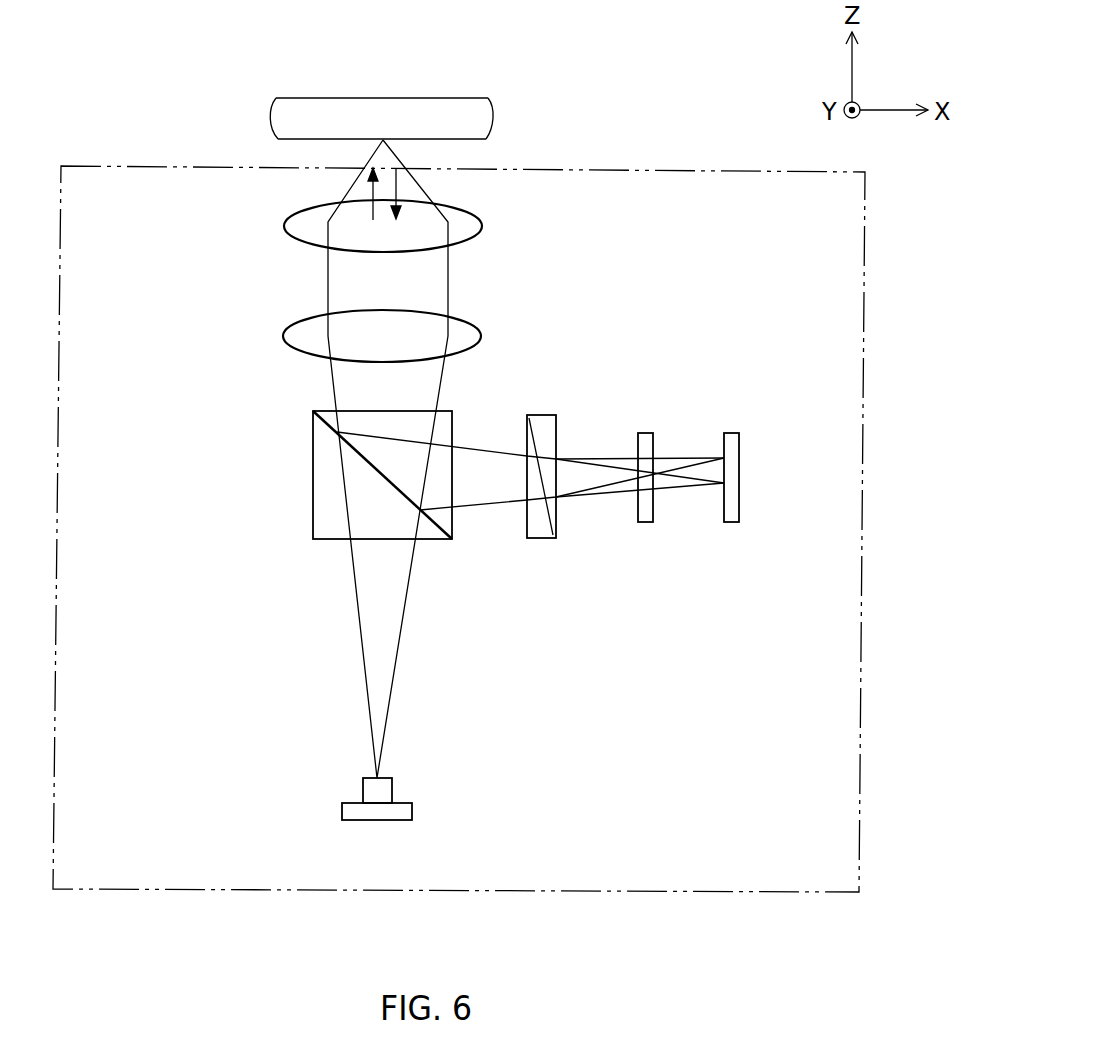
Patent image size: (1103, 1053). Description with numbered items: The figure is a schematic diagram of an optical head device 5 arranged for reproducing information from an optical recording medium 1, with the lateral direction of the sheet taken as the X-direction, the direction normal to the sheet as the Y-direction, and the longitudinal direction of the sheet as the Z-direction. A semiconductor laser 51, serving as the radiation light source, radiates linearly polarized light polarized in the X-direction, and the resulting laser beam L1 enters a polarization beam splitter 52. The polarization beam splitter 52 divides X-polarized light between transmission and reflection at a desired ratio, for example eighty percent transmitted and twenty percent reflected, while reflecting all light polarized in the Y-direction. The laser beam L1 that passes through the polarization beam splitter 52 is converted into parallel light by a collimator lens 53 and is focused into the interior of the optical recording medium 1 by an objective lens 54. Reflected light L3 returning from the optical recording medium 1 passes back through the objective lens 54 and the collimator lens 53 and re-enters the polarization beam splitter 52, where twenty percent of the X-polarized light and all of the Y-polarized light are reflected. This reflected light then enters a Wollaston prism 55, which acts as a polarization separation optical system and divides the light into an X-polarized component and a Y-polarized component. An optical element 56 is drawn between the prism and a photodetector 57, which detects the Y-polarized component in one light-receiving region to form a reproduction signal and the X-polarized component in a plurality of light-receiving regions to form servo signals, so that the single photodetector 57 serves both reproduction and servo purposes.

The optical recording medium 1 is at (433, 108).
The optical head device 5 is at (668, 169).
The semiconductor laser 51 is at (392, 792).
The polarization beam splitter 52 is at (313, 448).
The collimator lens 53 is at (470, 323).
The objective lens 54 is at (482, 230).
The Wollaston prism 55 is at (538, 533).
The optical element 56 is at (647, 522).
The photodetector 57 is at (733, 433).
The laser beam L1 is at (368, 194).
The reflected light L3 is at (398, 189).